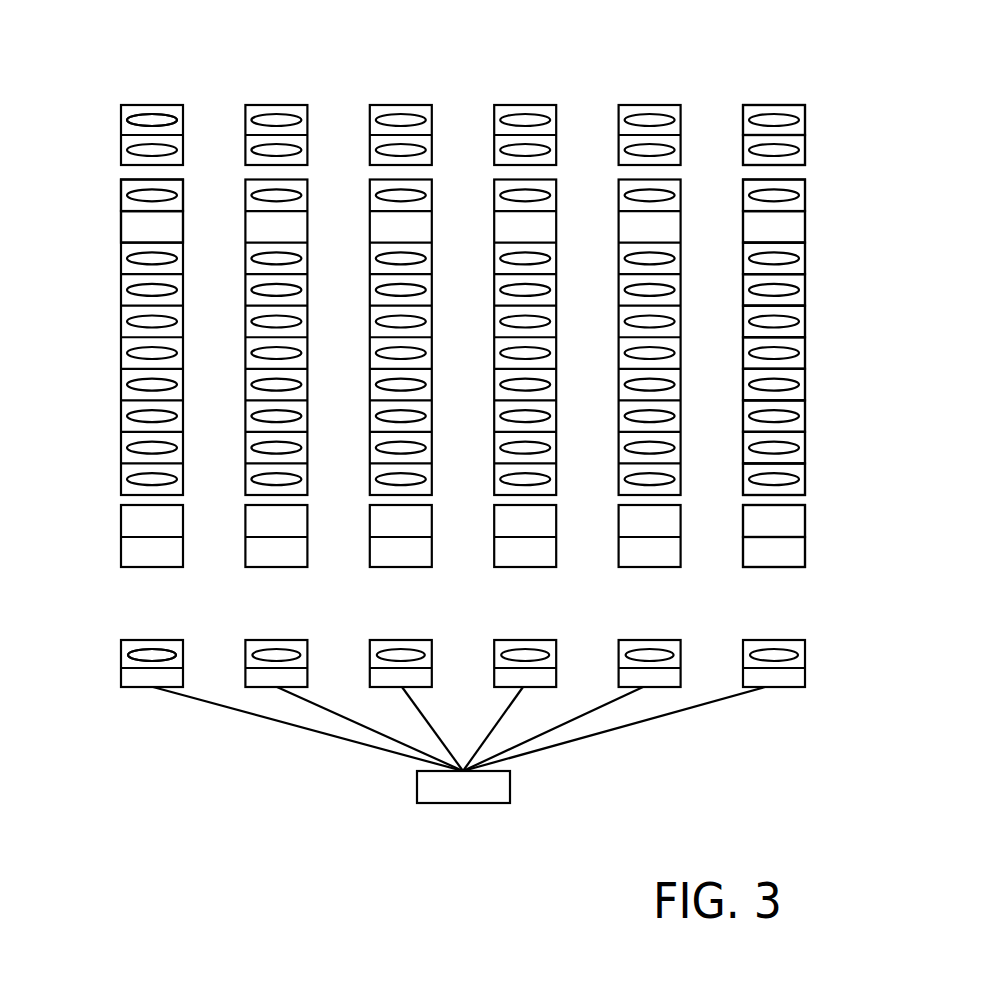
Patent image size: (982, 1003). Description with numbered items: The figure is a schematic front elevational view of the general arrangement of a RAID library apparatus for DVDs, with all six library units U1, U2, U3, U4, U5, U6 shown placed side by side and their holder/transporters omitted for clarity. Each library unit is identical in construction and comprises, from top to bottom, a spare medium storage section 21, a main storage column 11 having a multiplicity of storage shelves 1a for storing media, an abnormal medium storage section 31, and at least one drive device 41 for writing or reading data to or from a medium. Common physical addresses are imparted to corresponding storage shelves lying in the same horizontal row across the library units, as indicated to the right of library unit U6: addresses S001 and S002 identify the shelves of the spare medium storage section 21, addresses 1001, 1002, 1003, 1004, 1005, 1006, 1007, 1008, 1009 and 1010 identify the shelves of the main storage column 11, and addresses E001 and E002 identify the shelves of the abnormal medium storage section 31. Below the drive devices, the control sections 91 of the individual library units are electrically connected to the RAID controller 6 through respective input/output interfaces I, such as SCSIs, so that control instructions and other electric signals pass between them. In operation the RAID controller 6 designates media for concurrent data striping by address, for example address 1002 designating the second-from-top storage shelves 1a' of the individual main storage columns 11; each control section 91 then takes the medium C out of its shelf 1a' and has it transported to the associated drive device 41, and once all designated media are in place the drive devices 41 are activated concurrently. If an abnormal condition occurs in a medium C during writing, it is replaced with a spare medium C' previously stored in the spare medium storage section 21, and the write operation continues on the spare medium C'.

The library unit U1 is at (152, 344).
The library unit U2 is at (276, 344).
The library unit U3 is at (401, 344).
The library unit U4 is at (525, 344).
The library unit U5 is at (650, 344).
The library unit U6 is at (774, 344).
The spare medium storage section 21 is at (434, 153).
The main storage column 11 is at (435, 338).
The abnormal medium storage section 31 is at (435, 549).
The drive device 41 is at (436, 639).
The control section 91 is at (453, 737).
The RAID controller 6 is at (463, 803).
The input/output interface I is at (645, 722).
The storage shelf 1a is at (175, 229).
The storage shelf 1a' is at (111, 251).
The medium C is at (152, 621).
The spare medium C' is at (117, 90).
The physical address S001 is at (814, 120).
The physical address S002 is at (814, 150).
The physical address 1001 is at (814, 196).
The physical address 1002 is at (814, 227).
The physical address 1003 is at (814, 259).
The physical address 1004 is at (814, 290).
The physical address 1005 is at (814, 322).
The physical address 1006 is at (814, 353).
The physical address 1007 is at (814, 385).
The physical address 1008 is at (814, 416).
The physical address 1009 is at (814, 448).
The physical address 1010 is at (814, 479).
The physical address E001 is at (814, 521).
The physical address E002 is at (814, 552).